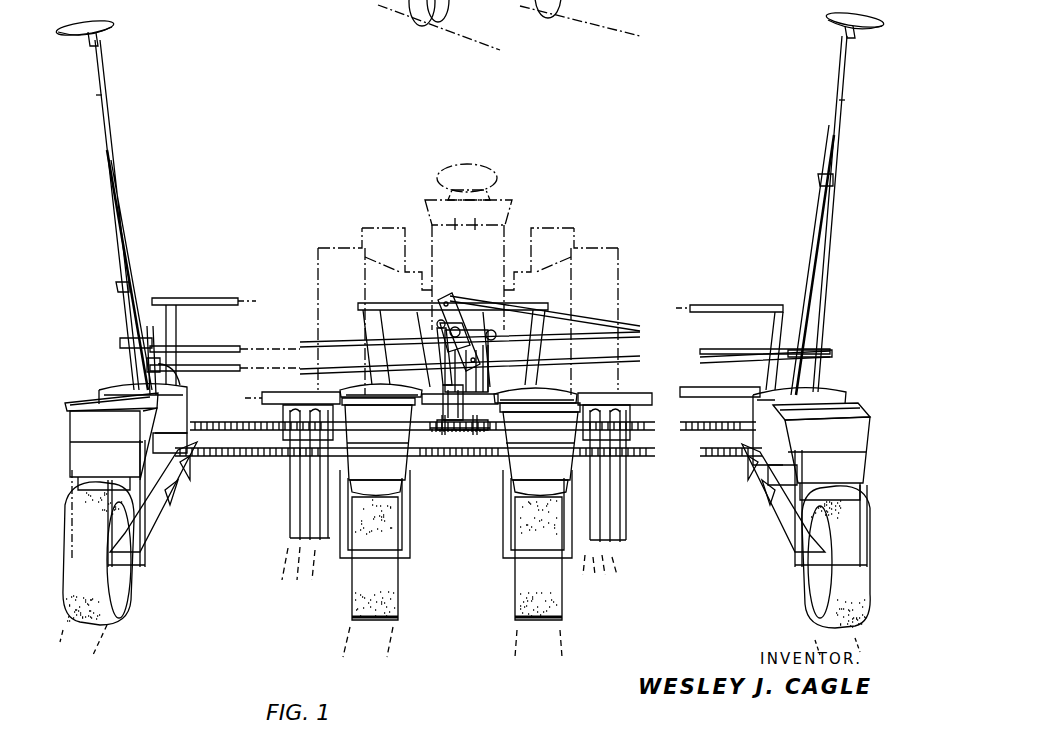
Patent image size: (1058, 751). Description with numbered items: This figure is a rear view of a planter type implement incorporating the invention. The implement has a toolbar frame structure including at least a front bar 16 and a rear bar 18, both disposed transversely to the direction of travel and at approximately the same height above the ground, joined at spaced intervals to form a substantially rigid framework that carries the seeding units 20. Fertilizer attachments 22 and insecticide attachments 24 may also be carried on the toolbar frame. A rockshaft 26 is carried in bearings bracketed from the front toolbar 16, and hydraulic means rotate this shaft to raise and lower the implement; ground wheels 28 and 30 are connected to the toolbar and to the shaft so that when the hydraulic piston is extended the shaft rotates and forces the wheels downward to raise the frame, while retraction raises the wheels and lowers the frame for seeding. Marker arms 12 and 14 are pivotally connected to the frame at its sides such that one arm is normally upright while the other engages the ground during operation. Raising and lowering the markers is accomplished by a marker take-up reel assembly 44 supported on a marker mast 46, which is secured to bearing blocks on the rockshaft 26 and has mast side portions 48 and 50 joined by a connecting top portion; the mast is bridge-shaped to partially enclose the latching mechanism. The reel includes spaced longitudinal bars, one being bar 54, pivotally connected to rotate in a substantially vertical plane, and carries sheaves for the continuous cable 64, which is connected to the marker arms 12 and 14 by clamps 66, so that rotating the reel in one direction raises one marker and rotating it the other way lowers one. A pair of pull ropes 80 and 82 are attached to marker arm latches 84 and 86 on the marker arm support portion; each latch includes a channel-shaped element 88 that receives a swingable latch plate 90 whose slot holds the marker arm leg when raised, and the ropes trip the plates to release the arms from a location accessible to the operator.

The marker arm 12 is at (824, 247).
The marker arm 14 is at (110, 172).
The front bar 16 is at (228, 425).
The rear bar 18 is at (224, 452).
The seeding unit 20 is at (355, 396).
The fertilizer attachment 22 is at (210, 299).
The insecticide attachment 24 is at (396, 442).
The rockshaft 26 is at (262, 395).
The ground wheel 28 is at (612, 503).
The ground wheel 30 is at (292, 503).
The marker take-up reel assembly 44 is at (468, 322).
The marker mast 46 is at (494, 337).
The mast side portion 48 is at (496, 366).
The mast side portion 50 is at (432, 362).
The longitudinal bar 54 is at (448, 296).
The cable 64 is at (240, 369).
The clamp 66 is at (116, 290).
The pull rope 80 is at (576, 346).
The pull rope 82 is at (228, 348).
The marker arm latch 84 is at (822, 348).
The marker arm latch 86 is at (180, 372).
The channel-shaped element 88 is at (155, 327).
The latch plate 90 is at (126, 342).